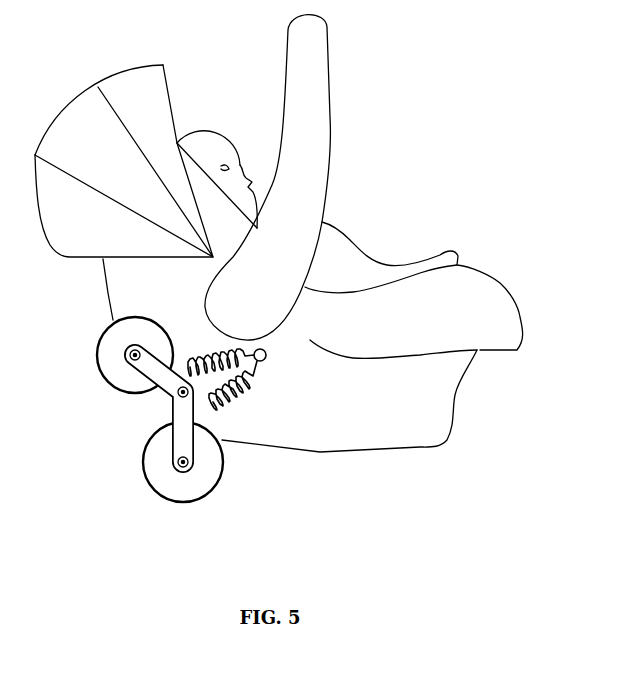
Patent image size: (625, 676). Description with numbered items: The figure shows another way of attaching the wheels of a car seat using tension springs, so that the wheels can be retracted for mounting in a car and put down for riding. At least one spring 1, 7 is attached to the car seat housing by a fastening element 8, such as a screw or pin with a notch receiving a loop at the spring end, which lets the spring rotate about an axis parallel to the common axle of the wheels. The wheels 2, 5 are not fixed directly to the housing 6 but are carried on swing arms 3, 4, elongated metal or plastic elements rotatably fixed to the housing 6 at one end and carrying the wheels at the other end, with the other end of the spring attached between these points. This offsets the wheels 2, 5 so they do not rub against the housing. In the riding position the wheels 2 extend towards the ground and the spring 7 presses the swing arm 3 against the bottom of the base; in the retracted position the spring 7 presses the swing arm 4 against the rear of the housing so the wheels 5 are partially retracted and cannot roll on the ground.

The spring 1 is at (195, 356).
The wheel 2 is at (112, 345).
The swing arm 3 is at (130, 357).
The swing arm 4 is at (193, 467).
The wheel 5 is at (213, 460).
The housing 6 is at (203, 402).
The spring 7 is at (250, 380).
The fastening element 8 is at (267, 356).